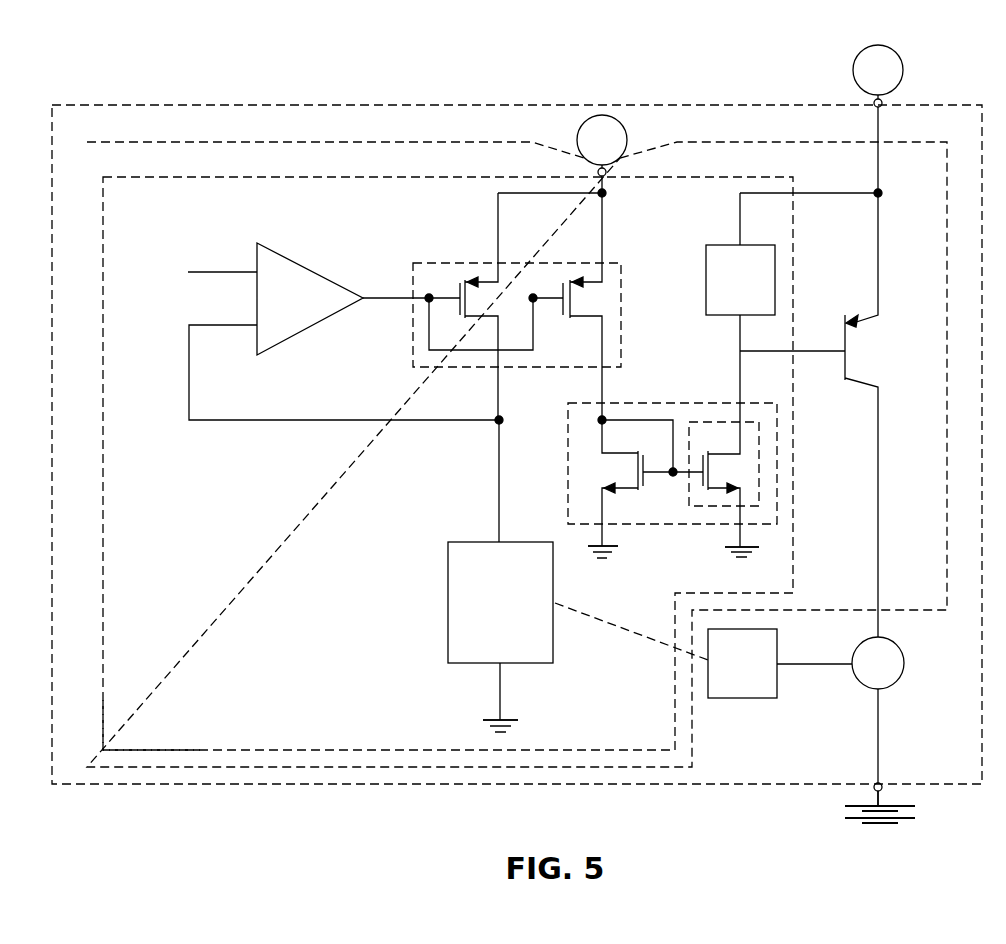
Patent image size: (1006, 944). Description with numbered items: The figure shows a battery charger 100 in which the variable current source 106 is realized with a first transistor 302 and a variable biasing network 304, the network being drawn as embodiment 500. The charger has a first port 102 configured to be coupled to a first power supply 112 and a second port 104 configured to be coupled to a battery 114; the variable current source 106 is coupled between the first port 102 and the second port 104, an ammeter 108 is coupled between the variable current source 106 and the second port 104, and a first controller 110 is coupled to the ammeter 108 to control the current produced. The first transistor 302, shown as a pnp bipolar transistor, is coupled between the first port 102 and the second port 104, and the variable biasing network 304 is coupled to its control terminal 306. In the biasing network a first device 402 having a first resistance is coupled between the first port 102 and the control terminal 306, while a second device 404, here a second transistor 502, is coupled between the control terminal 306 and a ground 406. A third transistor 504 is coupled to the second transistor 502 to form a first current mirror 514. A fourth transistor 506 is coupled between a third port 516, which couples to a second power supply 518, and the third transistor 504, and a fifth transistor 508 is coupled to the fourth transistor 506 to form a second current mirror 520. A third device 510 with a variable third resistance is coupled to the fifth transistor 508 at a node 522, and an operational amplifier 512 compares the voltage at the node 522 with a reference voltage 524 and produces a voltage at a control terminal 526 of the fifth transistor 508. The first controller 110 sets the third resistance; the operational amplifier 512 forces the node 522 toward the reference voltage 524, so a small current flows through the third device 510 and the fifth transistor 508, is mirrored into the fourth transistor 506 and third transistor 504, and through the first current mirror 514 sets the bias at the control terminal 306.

The battery charger embodiment 100 is at (517, 444).
The first port 102 is at (876, 108).
The second port 104 is at (873, 783).
The variable current source 106 is at (517, 454).
The ammeter 108 is at (900, 678).
The first controller 110 is at (780, 663).
The first power supply 112 is at (902, 58).
The battery 114 is at (905, 825).
The first transistor 302 is at (862, 347).
The variable biasing network 304 is at (151, 725).
The control terminal 306 is at (810, 352).
The first device 402 is at (740, 254).
The second device 404 is at (724, 464).
The ground 406 is at (527, 723).
The variable biasing network embodiment 500 is at (448, 463).
The second transistor 502 is at (731, 436).
The third transistor 504 is at (615, 487).
The fourth transistor 506 is at (586, 306).
The fifth transistor 508 is at (483, 306).
The third device 510 is at (500, 637).
The operational amplifier 512 is at (310, 299).
The first current mirror 514 is at (652, 468).
The third port 516 is at (606, 176).
The second power supply 518 is at (626, 132).
The second current mirror 520 is at (496, 309).
The node 522 is at (497, 418).
The reference voltage 524 is at (200, 272).
The control terminal 526 is at (430, 295).